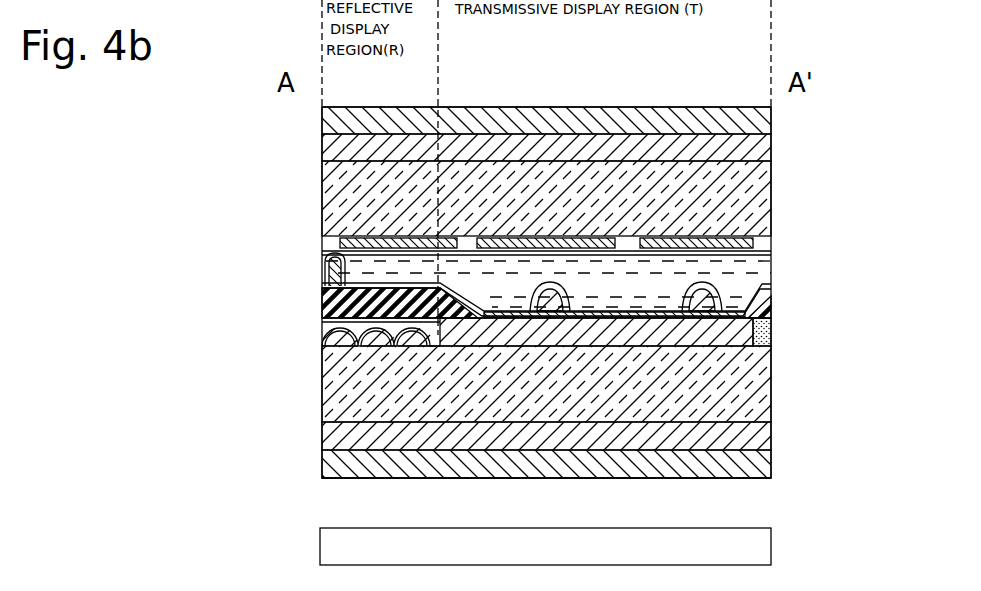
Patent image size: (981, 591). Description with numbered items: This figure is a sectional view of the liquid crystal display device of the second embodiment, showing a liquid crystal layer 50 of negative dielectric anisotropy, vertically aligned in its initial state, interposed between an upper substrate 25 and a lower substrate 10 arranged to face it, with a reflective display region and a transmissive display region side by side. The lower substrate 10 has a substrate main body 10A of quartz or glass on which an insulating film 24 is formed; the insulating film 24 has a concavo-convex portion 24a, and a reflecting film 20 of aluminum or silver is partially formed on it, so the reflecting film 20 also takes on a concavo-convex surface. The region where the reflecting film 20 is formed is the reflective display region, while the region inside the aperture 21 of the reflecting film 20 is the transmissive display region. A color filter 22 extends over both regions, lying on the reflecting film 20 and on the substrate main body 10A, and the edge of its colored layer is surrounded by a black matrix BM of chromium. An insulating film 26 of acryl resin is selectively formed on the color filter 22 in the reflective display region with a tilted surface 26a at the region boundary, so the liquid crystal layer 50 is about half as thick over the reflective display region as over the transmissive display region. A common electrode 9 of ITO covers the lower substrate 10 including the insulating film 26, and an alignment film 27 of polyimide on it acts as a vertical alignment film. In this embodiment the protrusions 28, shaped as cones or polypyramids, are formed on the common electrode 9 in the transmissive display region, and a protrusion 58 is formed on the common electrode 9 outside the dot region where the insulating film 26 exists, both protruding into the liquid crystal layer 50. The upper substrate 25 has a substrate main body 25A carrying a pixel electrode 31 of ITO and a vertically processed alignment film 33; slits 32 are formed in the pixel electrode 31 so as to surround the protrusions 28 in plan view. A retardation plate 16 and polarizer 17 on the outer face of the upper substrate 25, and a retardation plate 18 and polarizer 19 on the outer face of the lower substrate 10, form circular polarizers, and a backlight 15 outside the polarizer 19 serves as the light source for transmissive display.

The polarizer 17 is at (771, 120).
The retardation plate 16 is at (771, 148).
The substrate main body 25A is at (771, 181).
The alignment film 33 is at (771, 222).
The pixel electrode 31 is at (771, 247).
The liquid crystal layer 50 is at (771, 263).
The alignment film 27 is at (771, 283).
The common electrode 9 is at (322, 284).
The color filter edge portion 26a is at (771, 300).
The insulating film 26 is at (322, 305).
The black matrix BM is at (322, 322).
The color filter 22 is at (771, 378).
The substrate main body 10A is at (771, 426).
The retardation plate 18 is at (771, 460).
The polarizer 19 is at (771, 477).
The backlight 15 is at (771, 545).
The protrusion 58 is at (330, 258).
The reflecting film 20 is at (320, 332).
The concavo-convex portion 24a is at (360, 347).
The insulating film 24 is at (378, 348).
The aperture 21 is at (448, 320).
The protrusions 28 is at (550, 312).
The slits 32 is at (464, 244).
The upper substrate 25 is at (232, 108).
The lower substrate 10 is at (232, 276).